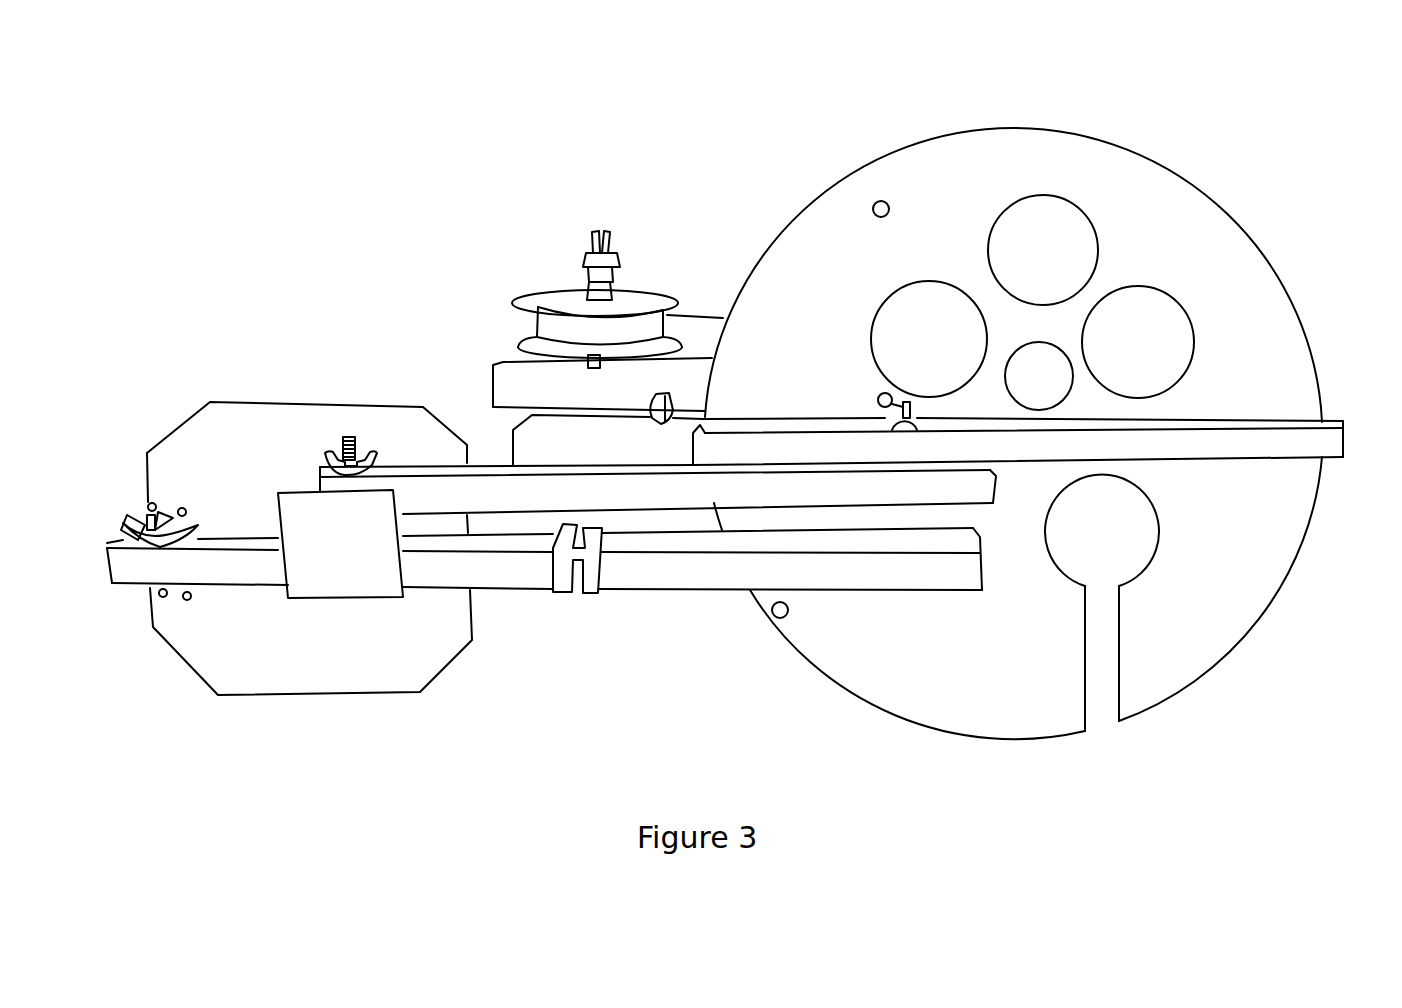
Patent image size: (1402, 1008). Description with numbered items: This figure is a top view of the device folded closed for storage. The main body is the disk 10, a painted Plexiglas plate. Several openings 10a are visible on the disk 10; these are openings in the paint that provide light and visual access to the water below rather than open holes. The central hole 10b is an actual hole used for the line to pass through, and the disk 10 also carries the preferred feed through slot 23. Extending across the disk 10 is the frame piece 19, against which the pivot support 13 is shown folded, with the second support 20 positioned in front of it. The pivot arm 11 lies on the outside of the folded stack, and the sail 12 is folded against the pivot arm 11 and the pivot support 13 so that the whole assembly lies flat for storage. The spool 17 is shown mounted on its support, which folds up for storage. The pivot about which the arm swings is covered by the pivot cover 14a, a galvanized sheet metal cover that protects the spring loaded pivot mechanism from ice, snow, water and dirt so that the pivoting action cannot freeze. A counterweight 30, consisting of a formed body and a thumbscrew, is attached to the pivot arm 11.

The disk 10 is at (1218, 170).
The openings 10a is at (1143, 268).
The central hole 10b is at (1137, 553).
The pivot arm 11 is at (697, 573).
The sail 12 is at (208, 415).
The pivot support 13 is at (493, 463).
The pivot cover 14a is at (378, 553).
The spool 17 is at (552, 302).
The frame piece 19 is at (1268, 443).
The second support 20 is at (677, 437).
The feed through slot 23 is at (1100, 688).
The counterweight 30 is at (575, 580).